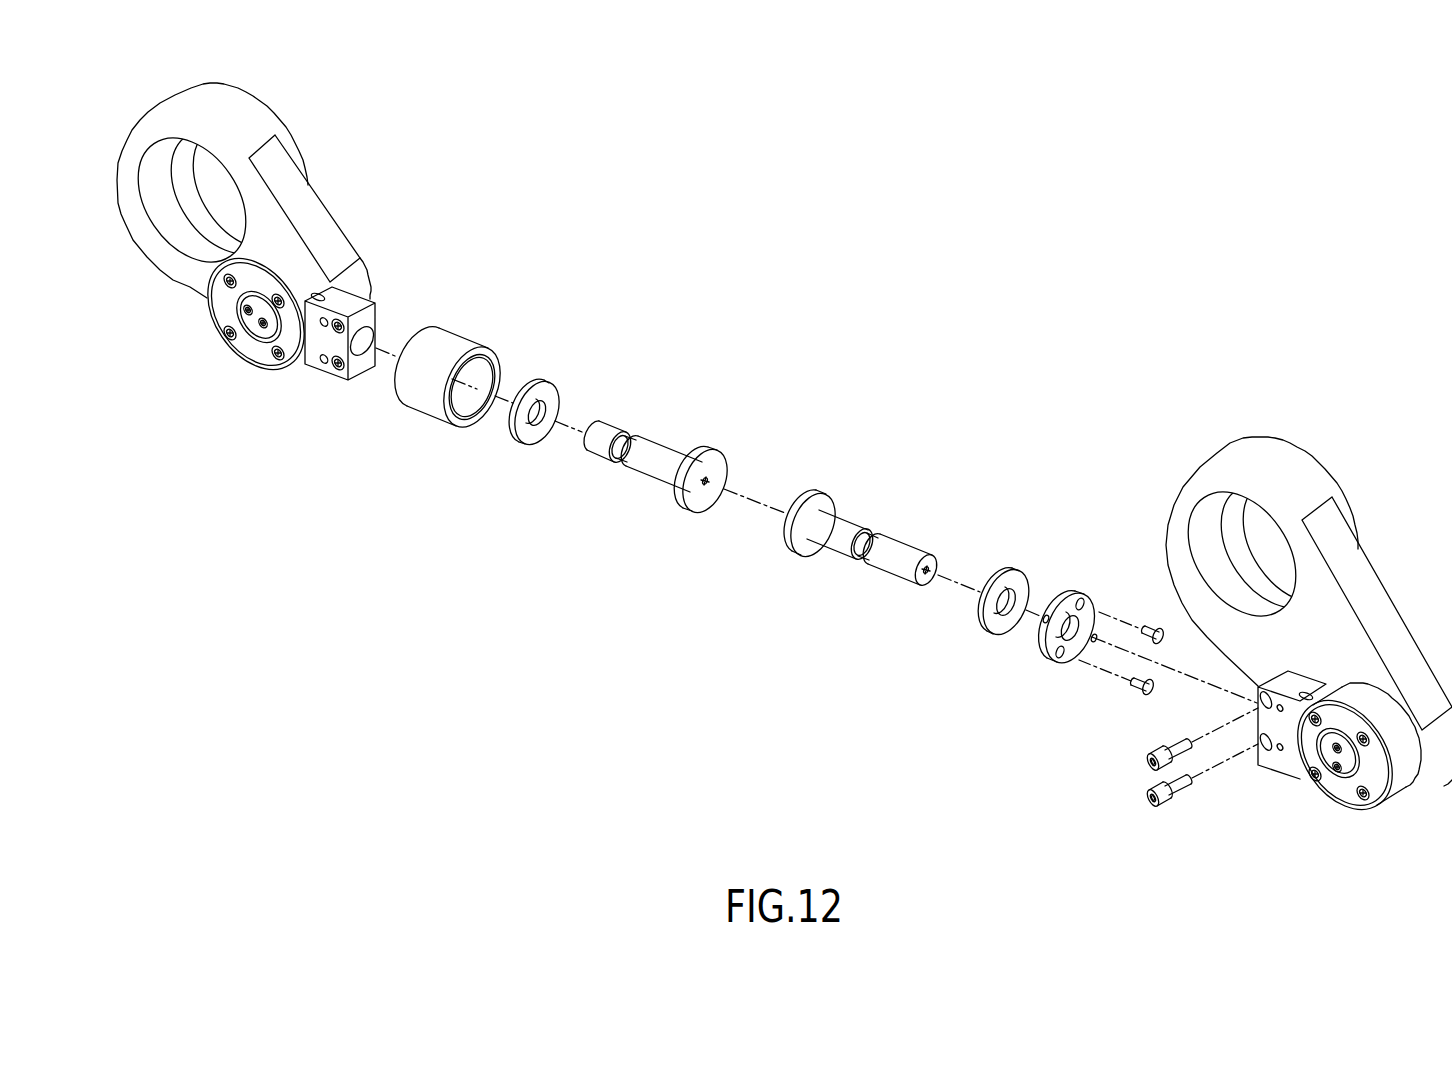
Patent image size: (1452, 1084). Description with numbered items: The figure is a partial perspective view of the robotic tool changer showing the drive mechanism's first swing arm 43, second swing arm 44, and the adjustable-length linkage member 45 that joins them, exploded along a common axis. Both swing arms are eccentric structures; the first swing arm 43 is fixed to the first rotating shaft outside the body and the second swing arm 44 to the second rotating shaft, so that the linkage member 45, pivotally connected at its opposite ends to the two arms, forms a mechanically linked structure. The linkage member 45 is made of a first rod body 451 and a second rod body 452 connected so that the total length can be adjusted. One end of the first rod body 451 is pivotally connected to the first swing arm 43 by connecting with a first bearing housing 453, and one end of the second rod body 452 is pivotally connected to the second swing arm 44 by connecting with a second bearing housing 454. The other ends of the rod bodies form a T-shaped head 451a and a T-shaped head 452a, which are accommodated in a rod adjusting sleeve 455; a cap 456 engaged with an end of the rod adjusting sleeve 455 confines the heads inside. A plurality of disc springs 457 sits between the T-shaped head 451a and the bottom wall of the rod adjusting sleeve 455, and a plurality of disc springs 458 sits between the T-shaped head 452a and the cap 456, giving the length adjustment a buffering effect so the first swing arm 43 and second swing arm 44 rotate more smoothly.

The first swing arm 43 is at (155, 262).
The second swing arm 44 is at (1290, 440).
The linkage member 45 is at (943, 353).
The first rod body 451 is at (668, 440).
The T-shaped head 451a is at (723, 457).
The second rod body 452 is at (848, 547).
The T-shaped head 452a is at (787, 540).
The first bearing housing 453 is at (305, 360).
The second bearing housing 454 is at (1290, 752).
The rod adjusting sleeve 455 is at (448, 328).
The cap 456 is at (1057, 657).
The disc springs 457 is at (517, 430).
The disc springs 458 is at (1008, 572).